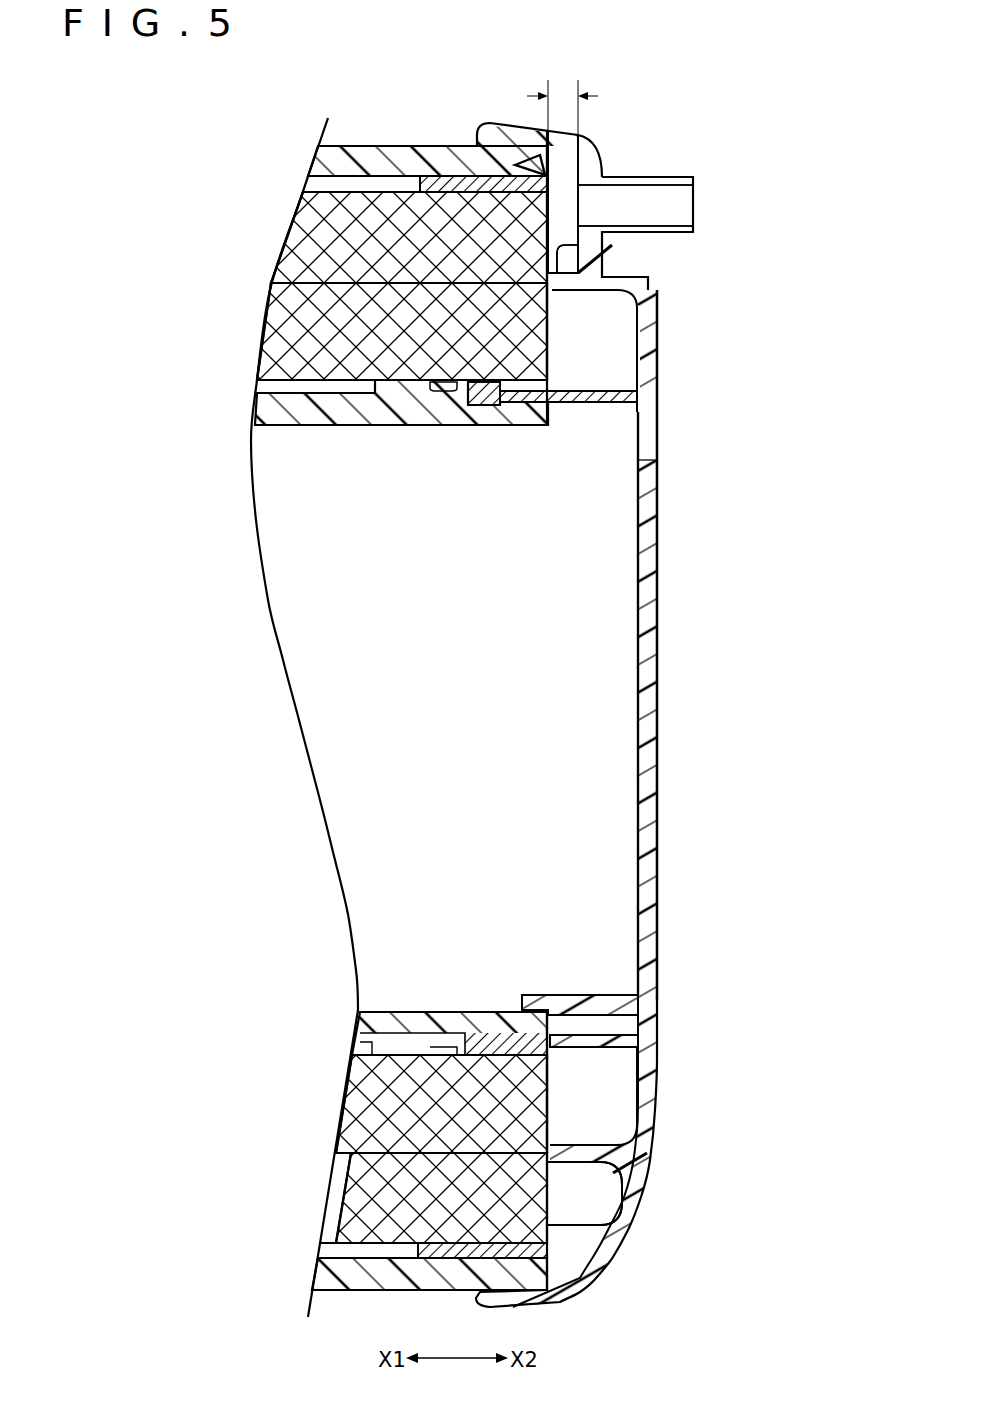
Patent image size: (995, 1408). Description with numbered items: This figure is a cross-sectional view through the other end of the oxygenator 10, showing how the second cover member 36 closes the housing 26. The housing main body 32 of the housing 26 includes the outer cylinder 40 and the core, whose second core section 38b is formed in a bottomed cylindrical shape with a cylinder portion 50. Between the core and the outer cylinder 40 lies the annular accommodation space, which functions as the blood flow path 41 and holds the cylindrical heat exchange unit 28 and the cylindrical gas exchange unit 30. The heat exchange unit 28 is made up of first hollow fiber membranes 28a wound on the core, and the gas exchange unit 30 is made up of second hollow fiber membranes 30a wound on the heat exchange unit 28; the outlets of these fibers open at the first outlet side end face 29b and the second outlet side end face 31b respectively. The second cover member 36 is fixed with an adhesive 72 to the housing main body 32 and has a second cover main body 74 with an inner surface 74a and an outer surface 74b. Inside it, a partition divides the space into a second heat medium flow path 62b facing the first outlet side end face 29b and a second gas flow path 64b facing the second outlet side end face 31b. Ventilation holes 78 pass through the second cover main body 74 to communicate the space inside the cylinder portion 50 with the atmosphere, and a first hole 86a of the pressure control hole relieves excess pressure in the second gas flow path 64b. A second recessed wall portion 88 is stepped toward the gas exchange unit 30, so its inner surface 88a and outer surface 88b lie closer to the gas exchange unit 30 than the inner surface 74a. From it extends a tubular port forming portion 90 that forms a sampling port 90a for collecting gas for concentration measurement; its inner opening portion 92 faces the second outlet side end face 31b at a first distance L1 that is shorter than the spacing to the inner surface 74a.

The oxygenator 10 is at (136, 195).
The housing 26 is at (463, 110).
The heat exchange unit 28 is at (256, 307).
The first hollow fiber membrane 28a is at (300, 343).
The first outlet side end face 29b is at (550, 358).
The gas exchange unit 30 is at (343, 180).
The second hollow fiber membrane 30a is at (300, 240).
The second outlet side end face 31b is at (556, 218).
The housing main body 32 is at (430, 142).
The second cover member 36 is at (670, 698).
The second core section 38b is at (416, 436).
The outer cylinder 40 is at (396, 158).
The blood flow path 41 is at (375, 188).
The cylinder portion 50 is at (412, 1022).
The second heat medium flow path 62b is at (620, 378).
The second gas flow path 64b is at (560, 163).
The adhesive 72 is at (445, 1262).
The second cover main body 74 is at (648, 591).
The inner surface 74a is at (637, 658).
The outer surface 74b is at (658, 645).
The ventilation hole 78 is at (648, 438).
The first hole 86a is at (605, 1263).
The second recessed wall portion 88 is at (590, 251).
The inner surface 88a is at (561, 278).
The outer surface 88b is at (623, 267).
The port forming portion 90 is at (614, 176).
The sampling port 90a is at (678, 210).
The inner opening portion 92 is at (521, 165).
The first distance L1 is at (562, 102).